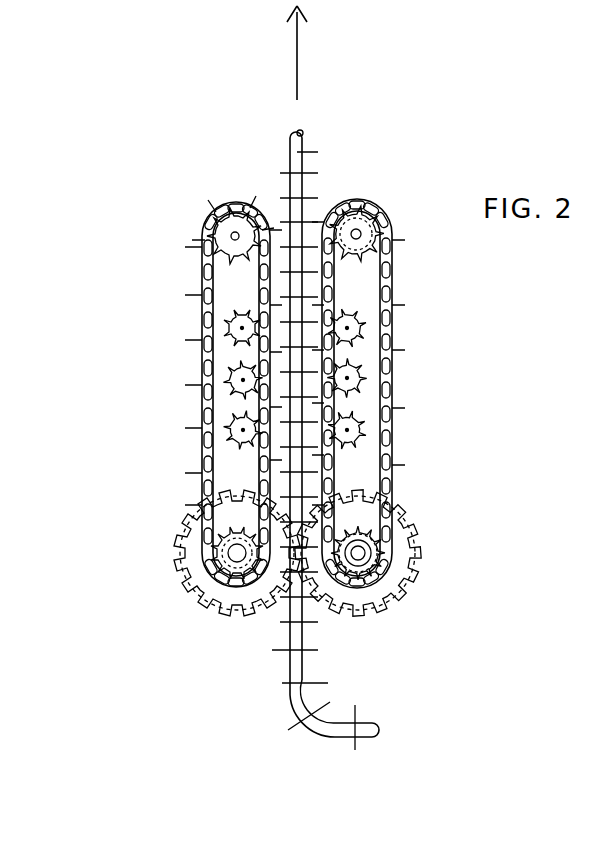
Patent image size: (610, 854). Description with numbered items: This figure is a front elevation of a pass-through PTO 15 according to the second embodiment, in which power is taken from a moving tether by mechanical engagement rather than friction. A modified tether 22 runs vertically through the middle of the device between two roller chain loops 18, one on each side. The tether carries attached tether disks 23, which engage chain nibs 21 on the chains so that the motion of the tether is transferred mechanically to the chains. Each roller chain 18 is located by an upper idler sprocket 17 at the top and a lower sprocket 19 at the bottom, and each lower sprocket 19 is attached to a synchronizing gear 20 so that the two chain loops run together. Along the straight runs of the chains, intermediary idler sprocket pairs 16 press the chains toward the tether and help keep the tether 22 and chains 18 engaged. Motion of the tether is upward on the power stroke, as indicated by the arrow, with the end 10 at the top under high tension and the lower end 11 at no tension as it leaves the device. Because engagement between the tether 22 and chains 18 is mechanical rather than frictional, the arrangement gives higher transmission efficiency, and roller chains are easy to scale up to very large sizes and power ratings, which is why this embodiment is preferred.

The end 10 is at (318, 121).
The lower end 11 is at (392, 720).
The pass-through PTO 15 is at (436, 82).
The intermediary idler sprocket pairs 16 is at (377, 285).
The upper idler sprockets 17 is at (203, 233).
The roller chain loops 18 is at (398, 428).
The lower sprockets 19 is at (373, 544).
The synchronizing gears 20 is at (388, 590).
The chain nibs 21 is at (218, 200).
The modified tether 22 is at (297, 155).
The tether disks 23 is at (322, 184).